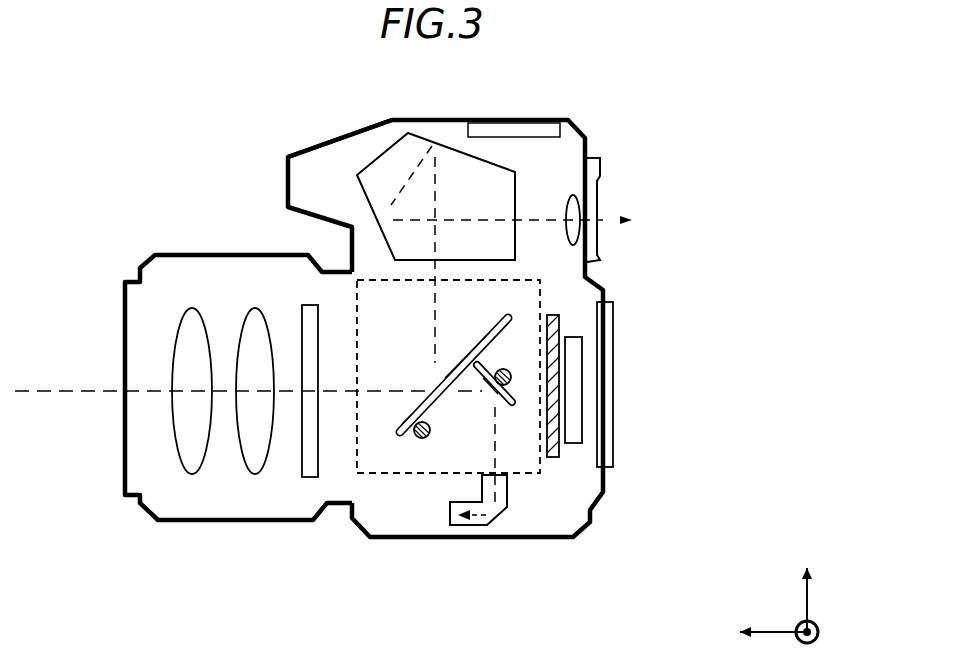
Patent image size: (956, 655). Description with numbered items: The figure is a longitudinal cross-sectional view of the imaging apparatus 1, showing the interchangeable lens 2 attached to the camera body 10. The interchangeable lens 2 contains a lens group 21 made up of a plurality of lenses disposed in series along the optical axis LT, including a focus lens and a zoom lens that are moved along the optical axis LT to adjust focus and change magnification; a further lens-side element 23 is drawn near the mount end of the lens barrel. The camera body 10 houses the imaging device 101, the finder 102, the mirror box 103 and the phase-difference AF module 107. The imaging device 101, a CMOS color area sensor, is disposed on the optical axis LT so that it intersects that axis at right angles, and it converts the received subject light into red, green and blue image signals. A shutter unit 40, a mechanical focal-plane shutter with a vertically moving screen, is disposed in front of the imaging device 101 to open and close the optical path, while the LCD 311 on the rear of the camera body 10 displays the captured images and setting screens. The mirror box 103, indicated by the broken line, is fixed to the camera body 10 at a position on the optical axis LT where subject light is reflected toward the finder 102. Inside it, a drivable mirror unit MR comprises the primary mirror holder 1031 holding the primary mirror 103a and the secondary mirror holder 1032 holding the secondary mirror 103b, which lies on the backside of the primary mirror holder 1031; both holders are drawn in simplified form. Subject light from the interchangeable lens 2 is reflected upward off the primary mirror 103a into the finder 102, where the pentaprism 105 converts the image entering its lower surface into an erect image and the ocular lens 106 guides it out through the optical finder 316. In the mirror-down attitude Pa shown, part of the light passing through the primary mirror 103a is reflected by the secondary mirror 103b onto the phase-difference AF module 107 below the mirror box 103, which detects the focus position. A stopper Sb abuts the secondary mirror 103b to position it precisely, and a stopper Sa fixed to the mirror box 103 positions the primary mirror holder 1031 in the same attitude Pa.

The imaging apparatus 1 is at (68, 129).
The interchangeable lens 2 is at (227, 248).
The camera body 10 is at (475, 112).
The lens group 21 is at (217, 492).
The lens-side optical element 23 is at (310, 479).
The shutter unit 40 is at (552, 459).
The imaging device 101 is at (573, 445).
The finder 102 is at (358, 161).
The mirror box 103 is at (541, 298).
The primary mirror 103a is at (463, 356).
The secondary mirror 103b is at (480, 387).
The pentaprism 105 is at (420, 156).
The ocular lens 106 is at (574, 194).
The phase-difference AF module 107 is at (465, 527).
The LCD 311 is at (609, 397).
The optical finder 316 is at (603, 207).
The primary mirror holder 1031 is at (440, 387).
The secondary mirror holder 1032 is at (497, 406).
The optical axis LT is at (65, 396).
The mirror unit MR is at (397, 441).
The mirror-down attitude Pa is at (405, 419).
The stopper Sa is at (422, 440).
The stopper Sb is at (511, 377).